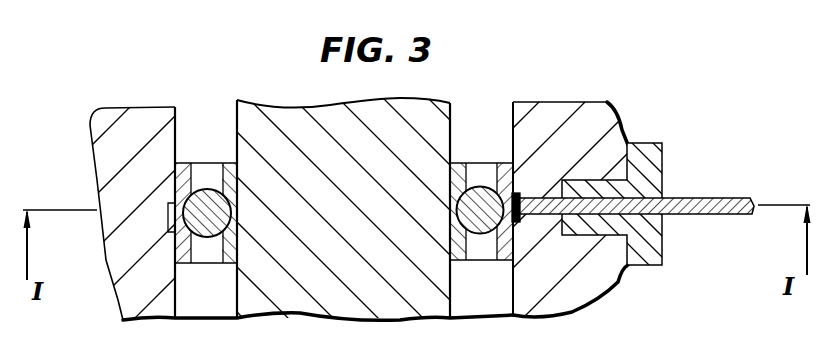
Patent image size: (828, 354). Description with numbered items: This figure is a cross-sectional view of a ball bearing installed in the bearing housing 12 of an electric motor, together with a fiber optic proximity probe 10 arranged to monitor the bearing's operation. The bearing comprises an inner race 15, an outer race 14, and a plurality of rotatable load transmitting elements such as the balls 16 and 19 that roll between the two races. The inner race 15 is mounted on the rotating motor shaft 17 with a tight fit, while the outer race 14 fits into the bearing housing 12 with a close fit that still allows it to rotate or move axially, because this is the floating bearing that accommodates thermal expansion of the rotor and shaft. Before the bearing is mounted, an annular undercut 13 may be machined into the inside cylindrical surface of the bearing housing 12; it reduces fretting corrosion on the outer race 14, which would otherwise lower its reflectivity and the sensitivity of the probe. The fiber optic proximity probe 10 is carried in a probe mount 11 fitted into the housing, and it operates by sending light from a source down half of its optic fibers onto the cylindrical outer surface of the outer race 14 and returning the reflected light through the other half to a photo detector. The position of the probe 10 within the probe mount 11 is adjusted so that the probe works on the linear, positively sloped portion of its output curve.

The fiber optic proximity probe 10 is at (697, 198).
The probe mount 11 is at (663, 240).
The bearing housing 12 is at (119, 164).
The annular undercut 13 is at (168, 216).
The outer race 14 is at (185, 163).
The inner race 15 is at (227, 265).
The ball 16 is at (478, 187).
The motor shaft 17 is at (372, 246).
The ball 19 is at (207, 189).